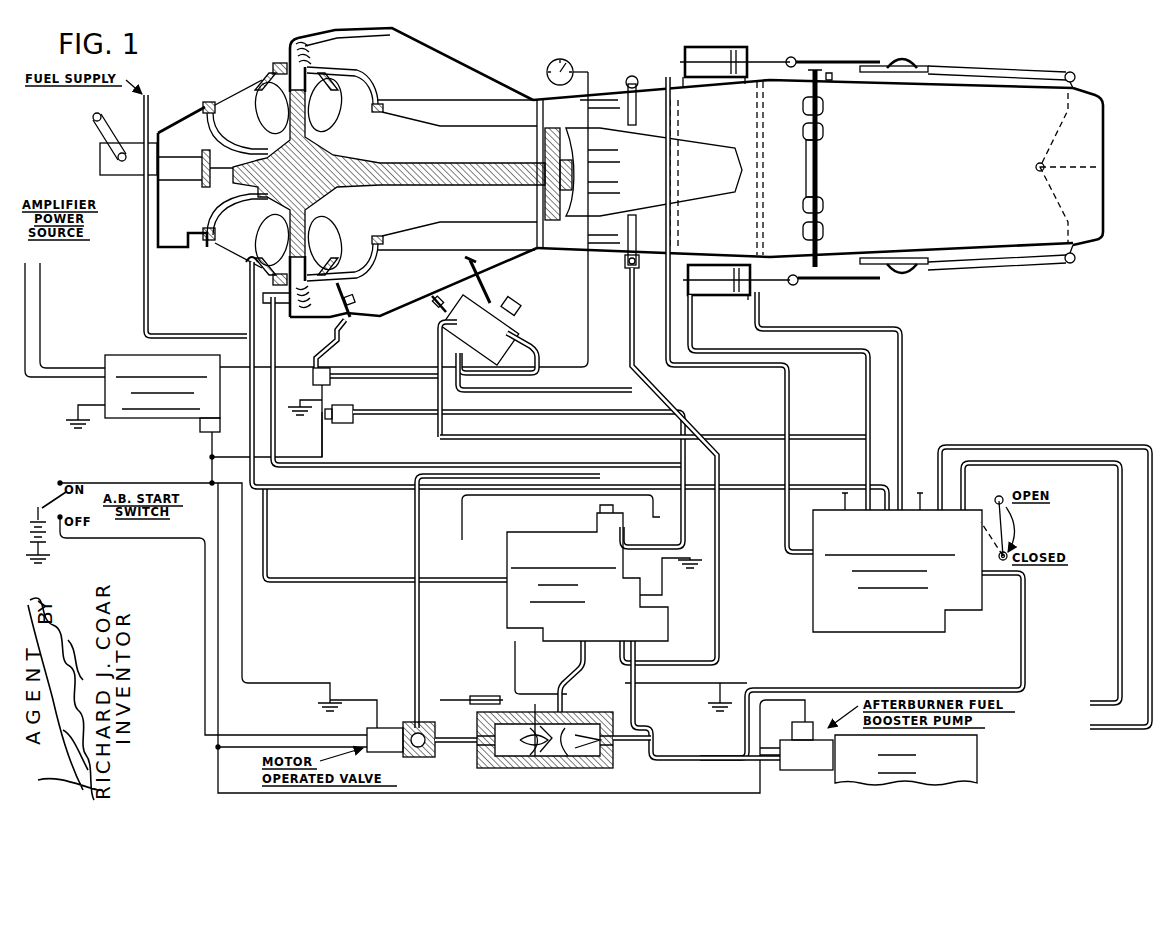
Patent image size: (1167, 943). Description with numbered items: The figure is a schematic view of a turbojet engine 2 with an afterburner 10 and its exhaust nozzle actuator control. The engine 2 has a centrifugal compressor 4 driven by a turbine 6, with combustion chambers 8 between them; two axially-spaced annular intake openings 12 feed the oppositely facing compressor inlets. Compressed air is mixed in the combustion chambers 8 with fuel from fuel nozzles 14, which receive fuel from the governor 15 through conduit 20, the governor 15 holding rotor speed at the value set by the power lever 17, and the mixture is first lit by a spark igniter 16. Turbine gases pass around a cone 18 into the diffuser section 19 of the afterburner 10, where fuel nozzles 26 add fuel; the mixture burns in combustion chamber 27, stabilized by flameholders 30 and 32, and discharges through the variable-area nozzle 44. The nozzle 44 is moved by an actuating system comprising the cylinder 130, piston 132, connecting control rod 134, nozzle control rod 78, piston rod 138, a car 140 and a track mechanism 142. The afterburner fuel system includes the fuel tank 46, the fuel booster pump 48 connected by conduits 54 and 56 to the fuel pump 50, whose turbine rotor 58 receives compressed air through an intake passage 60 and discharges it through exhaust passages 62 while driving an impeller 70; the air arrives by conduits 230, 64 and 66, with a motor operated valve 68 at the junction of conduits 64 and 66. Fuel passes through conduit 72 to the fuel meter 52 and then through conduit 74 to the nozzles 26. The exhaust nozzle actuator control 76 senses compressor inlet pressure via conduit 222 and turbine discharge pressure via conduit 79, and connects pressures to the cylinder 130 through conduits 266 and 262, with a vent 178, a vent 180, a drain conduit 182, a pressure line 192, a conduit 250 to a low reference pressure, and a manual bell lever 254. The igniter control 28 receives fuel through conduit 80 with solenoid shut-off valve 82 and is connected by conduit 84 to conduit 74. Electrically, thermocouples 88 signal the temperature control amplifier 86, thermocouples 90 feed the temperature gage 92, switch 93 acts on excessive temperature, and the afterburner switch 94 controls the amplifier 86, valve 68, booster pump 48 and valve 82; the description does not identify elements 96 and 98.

The turbojet engine 2 is at (156, 238).
The compressor 4 is at (257, 187).
The turbine 6 is at (545, 148).
The combustion chambers 8 is at (447, 58).
The afterburner 10 is at (655, 83).
The annular intake openings 12 is at (227, 93).
The fuel nozzles 14 is at (351, 307).
The governor 15 is at (100, 157).
The spark igniter 16 is at (469, 262).
The power lever 17 is at (92, 119).
The cone 18 is at (700, 142).
The diffuser section 19 is at (735, 224).
The conduit 20 is at (143, 296).
The fuel nozzles 26 is at (637, 107).
The combustion chamber 27 is at (935, 169).
The igniter control 28 is at (497, 300).
The flameholder 30 is at (826, 107).
The flameholder 32 is at (826, 136).
The nozzle 44 is at (1107, 182).
The fuel tank 46 is at (979, 751).
The fuel booster pump 48 is at (815, 728).
The fuel pump 50 is at (477, 770).
The fuel meter 52 is at (505, 605).
The conduit 54 is at (668, 761).
The conduit 56 is at (655, 740).
The turbine rotor 58 is at (515, 722).
The intake passage 60 is at (490, 738).
The exhaust passages 62 is at (520, 724).
The conduit 64 is at (412, 610).
The conduit 66 is at (448, 752).
The motor operated valve 68 is at (386, 723).
The impeller 70 is at (605, 757).
The conduit 72 is at (575, 661).
The conduit 74 is at (629, 292).
The exhaust nozzle actuator control 76 is at (811, 613).
The nozzle control rod 78 is at (1018, 67).
The conduit 79 is at (665, 320).
The conduit 80 is at (351, 348).
The solenoid actuated shut-off valve 82 is at (331, 389).
The conduit 84 is at (424, 361).
The temperature control amplifier 86 is at (118, 353).
The thermocouples 88 is at (618, 150).
The thermocouples 90 is at (605, 100).
The temperature gage 92 is at (568, 60).
The switch 93 is at (199, 429).
The afterburner switch 94 is at (50, 502).
The solenoid valve 96 is at (340, 424).
The control pressure line 98 is at (430, 437).
The cylinder 130 is at (712, 47).
The piston 132 is at (745, 48).
The connecting control rod 134 is at (845, 58).
The piston rod 138 is at (795, 57).
The car 140 is at (905, 57).
The track mechanism 142 is at (935, 66).
The vent 178 is at (843, 502).
The vent 180 is at (925, 490).
The conduit 182 is at (1032, 447).
The line 192 is at (1026, 609).
The conduit 222 is at (790, 575).
The conduit 230 is at (400, 489).
The conduit 250 is at (1087, 463).
The bell lever 254 is at (1020, 531).
The conduit 262 is at (903, 360).
The conduit 266 is at (865, 366).